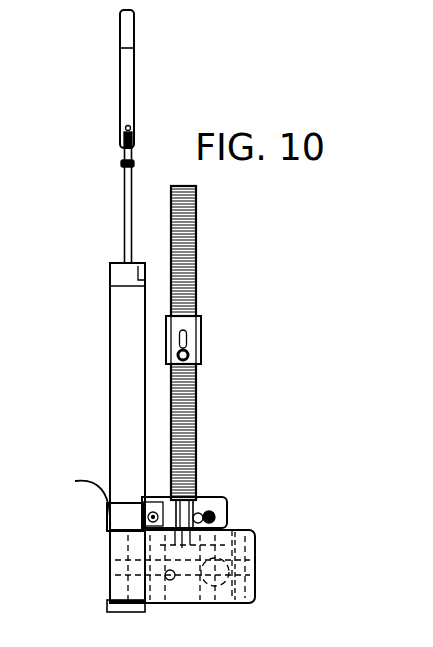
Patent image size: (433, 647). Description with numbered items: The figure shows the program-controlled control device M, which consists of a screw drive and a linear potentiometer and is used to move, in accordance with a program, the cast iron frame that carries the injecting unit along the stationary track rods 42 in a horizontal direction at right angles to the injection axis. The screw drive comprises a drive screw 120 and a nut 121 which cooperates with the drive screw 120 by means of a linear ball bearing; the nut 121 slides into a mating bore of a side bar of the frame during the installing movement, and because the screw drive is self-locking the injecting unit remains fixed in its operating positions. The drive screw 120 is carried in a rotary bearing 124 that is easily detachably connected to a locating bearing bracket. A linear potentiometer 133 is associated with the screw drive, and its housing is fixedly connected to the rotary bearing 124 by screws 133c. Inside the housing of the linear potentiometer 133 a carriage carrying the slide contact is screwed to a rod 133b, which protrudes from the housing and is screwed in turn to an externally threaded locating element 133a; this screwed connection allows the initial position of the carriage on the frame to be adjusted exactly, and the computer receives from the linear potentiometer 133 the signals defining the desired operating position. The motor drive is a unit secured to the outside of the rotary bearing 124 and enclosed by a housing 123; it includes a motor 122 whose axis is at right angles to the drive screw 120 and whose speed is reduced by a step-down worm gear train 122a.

The track rods 42 is at (57, 0).
The locating element 133a is at (140, 107).
The rod 133b is at (127, 214).
The linear potentiometer 133 is at (120, 378).
The screws 133c is at (80, 498).
The drive screw 120 is at (198, 407).
The nut 121 is at (200, 333).
The rotary bearing 124 is at (205, 495).
The worm gear train 122a is at (243, 523).
The motor 122 is at (258, 600).
The housing 123 is at (255, 541).
The control device M is at (292, 333).